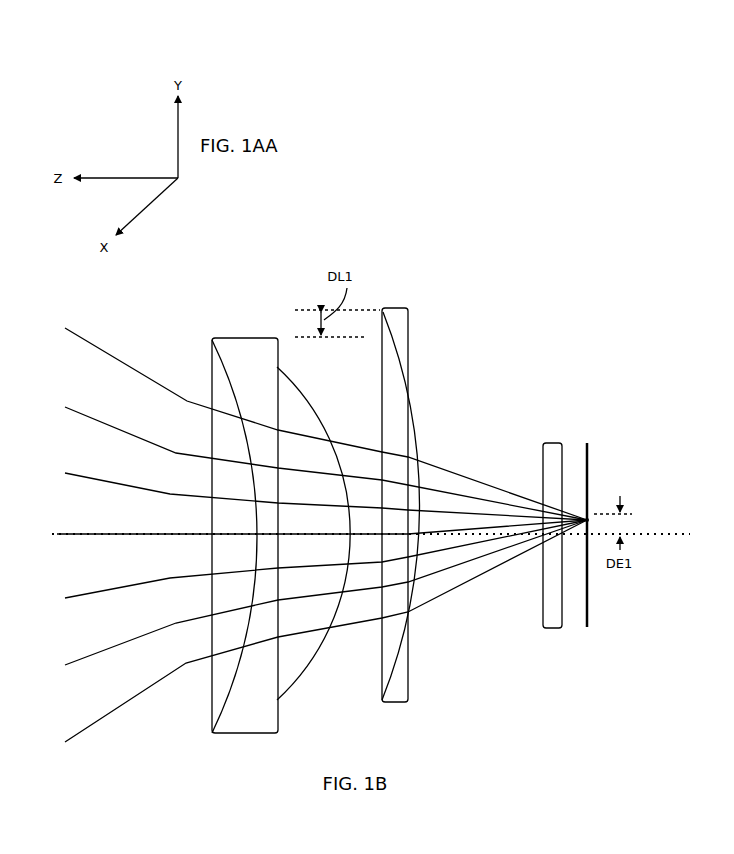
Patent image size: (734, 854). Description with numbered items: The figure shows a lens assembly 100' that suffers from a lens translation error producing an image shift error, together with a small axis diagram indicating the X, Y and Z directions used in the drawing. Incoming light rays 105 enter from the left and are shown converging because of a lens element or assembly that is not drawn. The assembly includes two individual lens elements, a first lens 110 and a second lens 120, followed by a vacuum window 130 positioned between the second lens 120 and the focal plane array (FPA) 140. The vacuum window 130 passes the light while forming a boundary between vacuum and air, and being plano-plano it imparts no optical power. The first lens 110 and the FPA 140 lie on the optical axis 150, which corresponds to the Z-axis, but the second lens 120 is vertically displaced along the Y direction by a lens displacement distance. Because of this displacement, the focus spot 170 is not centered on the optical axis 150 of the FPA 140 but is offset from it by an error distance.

The lens assembly 100' is at (510, 238).
The incoming light rays 105 is at (322, 535).
The first lens 110 is at (281, 509).
The second lens 120 is at (399, 476).
The vacuum window 130 is at (553, 579).
The focal plane array (FPA) 140 is at (603, 547).
The optical axis 150 is at (379, 544).
The focus spot 170 is at (593, 515).